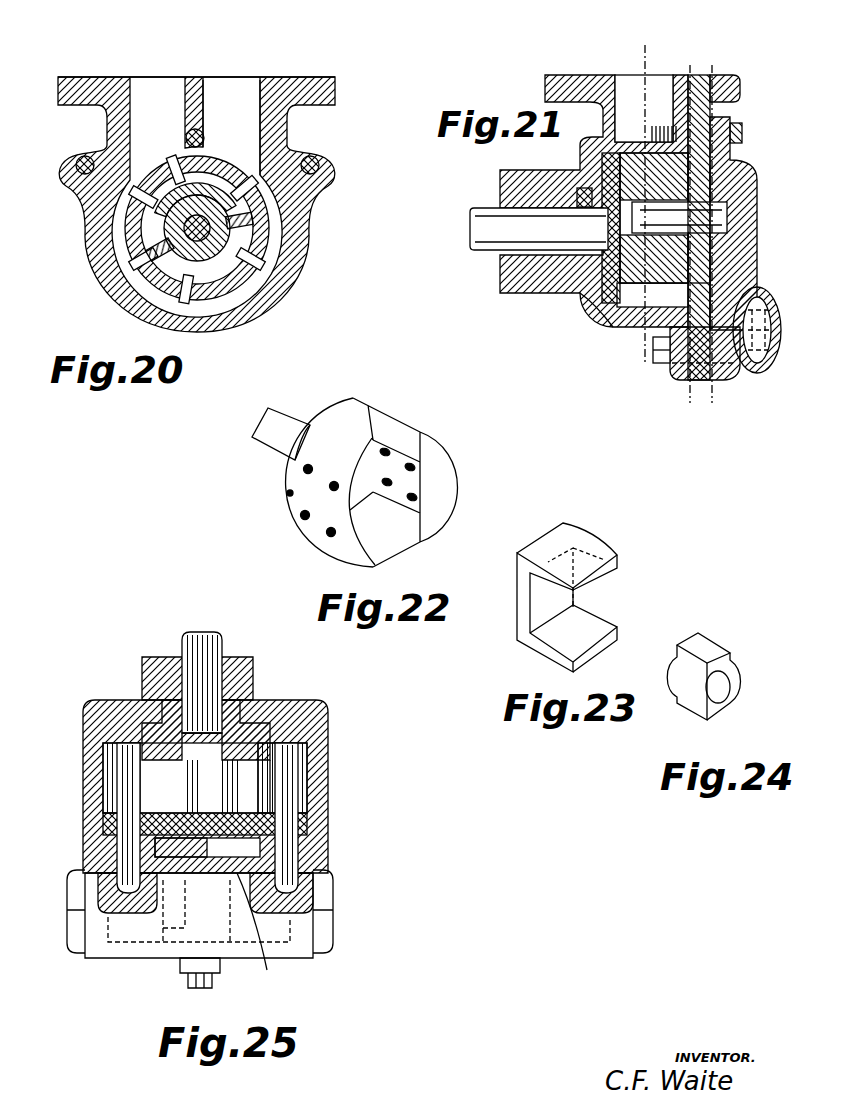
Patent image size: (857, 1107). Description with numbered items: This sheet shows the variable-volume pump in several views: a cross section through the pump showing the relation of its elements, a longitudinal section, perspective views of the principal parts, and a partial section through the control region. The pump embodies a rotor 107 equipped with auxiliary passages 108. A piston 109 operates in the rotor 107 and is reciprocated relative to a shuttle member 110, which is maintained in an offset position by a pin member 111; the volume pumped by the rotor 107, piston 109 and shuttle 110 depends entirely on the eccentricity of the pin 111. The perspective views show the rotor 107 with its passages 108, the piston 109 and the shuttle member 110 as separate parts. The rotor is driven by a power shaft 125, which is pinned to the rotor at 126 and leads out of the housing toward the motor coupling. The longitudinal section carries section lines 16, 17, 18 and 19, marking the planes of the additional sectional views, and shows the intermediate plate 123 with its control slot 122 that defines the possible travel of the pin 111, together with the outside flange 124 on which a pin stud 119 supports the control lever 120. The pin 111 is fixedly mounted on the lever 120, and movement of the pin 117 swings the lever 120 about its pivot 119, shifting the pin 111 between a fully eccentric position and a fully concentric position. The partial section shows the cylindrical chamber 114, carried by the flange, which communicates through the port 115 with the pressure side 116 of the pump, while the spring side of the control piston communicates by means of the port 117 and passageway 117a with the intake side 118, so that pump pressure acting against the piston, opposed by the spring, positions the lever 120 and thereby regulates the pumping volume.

In FIG. 21, the section line 16— 16 is at (730, 110).
In FIG. 21, the section line 17— 17 is at (735, 65).
In FIG. 21, the section line 18— 18 is at (690, 65).
In FIG. 21, the section line 19— 19 is at (645, 45).
In FIG. 20, the rotor 107 is at (212, 158).
In FIG. 21, the rotor 107 is at (582, 307).
In FIG. 22, the rotor 107 is at (433, 460).
In FIG. 25, the rotor 107 is at (270, 702).
In FIG. 20, the auxiliary passages 108 is at (177, 158).
In FIG. 22, the auxiliary passages 108 is at (305, 513).
In FIG. 20, the piston 109 is at (237, 197).
In FIG. 21, the piston 109 is at (602, 167).
In FIG. 23, the piston 109 is at (567, 540).
In FIG. 20, the shuttle member 110 is at (160, 277).
In FIG. 21, the shuttle member 110 is at (742, 150).
In FIG. 24, the shuttle member 110 is at (725, 660).
In FIG. 20, the pin member 111 is at (243, 205).
In FIG. 25, the cylindrical chamber 114 is at (333, 890).
In FIG. 25, the port 115 is at (102, 877).
In FIG. 20, the pressure side 116 is at (147, 86).
In FIG. 21, the pressure side 116 is at (638, 300).
In FIG. 25, the pressure side 116 is at (112, 763).
In FIG. 21, the port / pin member 117 is at (653, 335).
In FIG. 25, the port / pin member 117 is at (177, 920).
In FIG. 25, the passageway 117a is at (330, 840).
In FIG. 20, the intake side 118 is at (225, 86).
In FIG. 25, the intake side 118 is at (330, 750).
In FIG. 20, the pin stud 119 is at (153, 248).
In FIG. 21, the control lever 120 is at (498, 175).
In FIG. 25, the control lever 120 is at (242, 663).
In FIG. 21, the control slot 122 is at (745, 225).
In FIG. 21, the intermediate plate 123 is at (745, 178).
In FIG. 25, the intermediate plate 123 is at (333, 817).
In FIG. 21, the outside flange 124 is at (735, 250).
In FIG. 21, the power shaft 125 is at (478, 253).
In FIG. 22, the power shaft 125 is at (278, 427).
In FIG. 25, the power shaft 125 is at (197, 640).
In FIG. 21, the pin connection 126 is at (583, 293).
In FIG. 25, the pin connection 126 is at (200, 710).